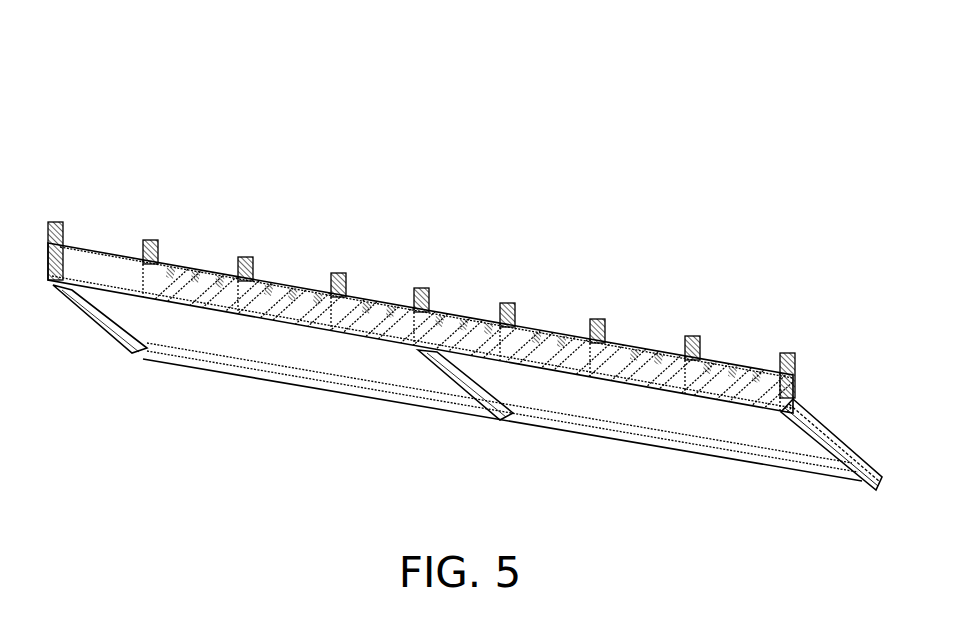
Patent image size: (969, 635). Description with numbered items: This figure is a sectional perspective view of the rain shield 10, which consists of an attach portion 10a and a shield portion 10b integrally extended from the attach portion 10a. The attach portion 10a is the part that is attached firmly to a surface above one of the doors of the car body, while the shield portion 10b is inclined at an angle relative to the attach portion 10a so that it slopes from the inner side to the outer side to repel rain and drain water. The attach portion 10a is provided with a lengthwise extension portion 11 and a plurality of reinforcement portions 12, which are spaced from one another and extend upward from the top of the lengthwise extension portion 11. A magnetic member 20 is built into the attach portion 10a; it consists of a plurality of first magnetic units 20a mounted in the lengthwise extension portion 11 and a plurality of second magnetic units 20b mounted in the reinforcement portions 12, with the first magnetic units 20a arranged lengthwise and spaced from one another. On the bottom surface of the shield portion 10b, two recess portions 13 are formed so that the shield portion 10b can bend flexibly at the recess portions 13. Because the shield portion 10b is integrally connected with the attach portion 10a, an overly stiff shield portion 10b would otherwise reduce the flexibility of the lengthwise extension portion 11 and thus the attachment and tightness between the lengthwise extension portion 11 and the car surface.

The rain shield 10 is at (893, 290).
The attach portion 10a is at (796, 383).
The shield portion 10b is at (843, 435).
The lengthwise extension portion 11 is at (268, 287).
The reinforcement portions 12 is at (242, 256).
The recess portions 13 is at (278, 350).
The magnetic member 20 is at (243, 118).
The first magnetic units 20a is at (75, 258).
The second magnetic units 20b is at (152, 238).